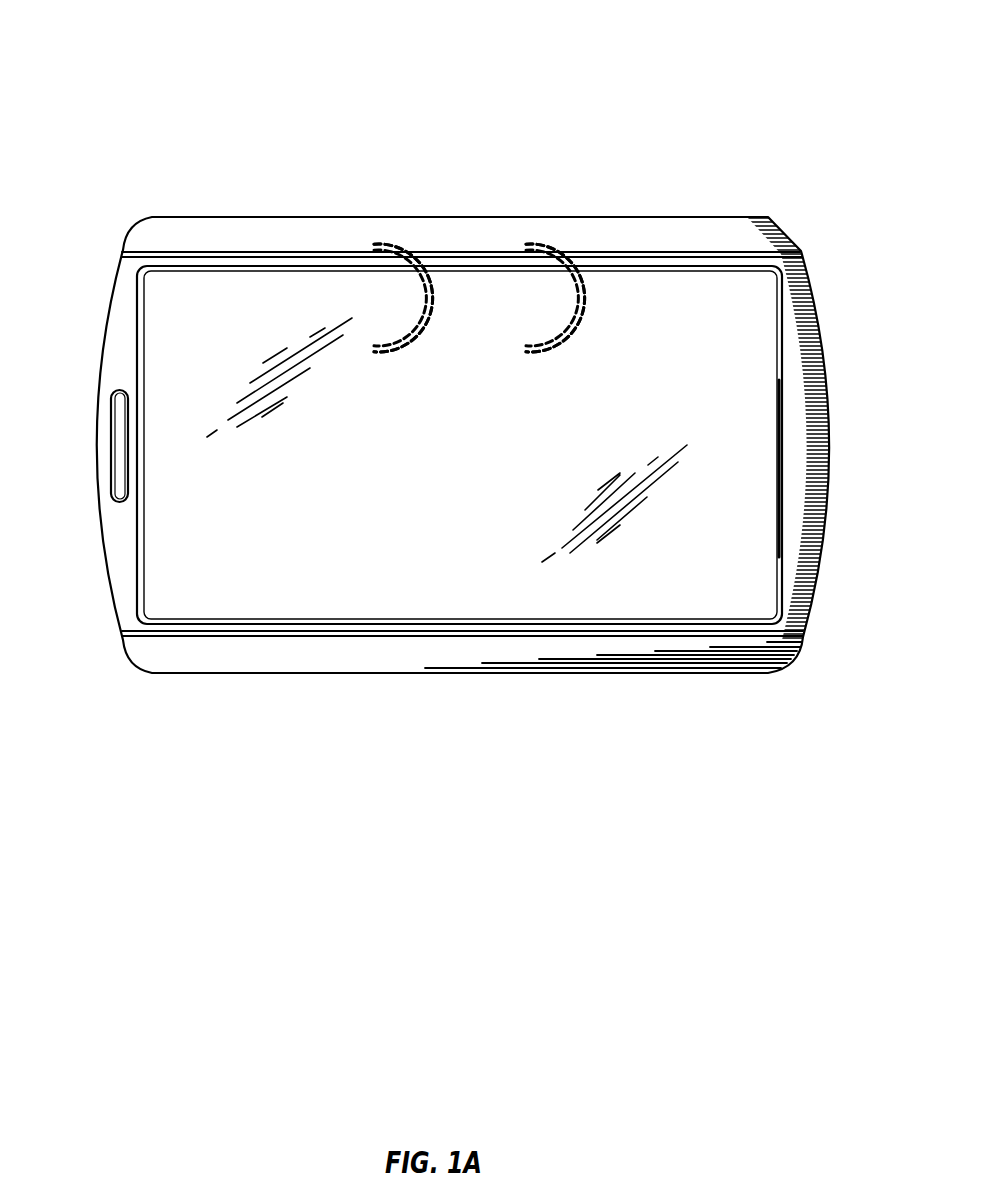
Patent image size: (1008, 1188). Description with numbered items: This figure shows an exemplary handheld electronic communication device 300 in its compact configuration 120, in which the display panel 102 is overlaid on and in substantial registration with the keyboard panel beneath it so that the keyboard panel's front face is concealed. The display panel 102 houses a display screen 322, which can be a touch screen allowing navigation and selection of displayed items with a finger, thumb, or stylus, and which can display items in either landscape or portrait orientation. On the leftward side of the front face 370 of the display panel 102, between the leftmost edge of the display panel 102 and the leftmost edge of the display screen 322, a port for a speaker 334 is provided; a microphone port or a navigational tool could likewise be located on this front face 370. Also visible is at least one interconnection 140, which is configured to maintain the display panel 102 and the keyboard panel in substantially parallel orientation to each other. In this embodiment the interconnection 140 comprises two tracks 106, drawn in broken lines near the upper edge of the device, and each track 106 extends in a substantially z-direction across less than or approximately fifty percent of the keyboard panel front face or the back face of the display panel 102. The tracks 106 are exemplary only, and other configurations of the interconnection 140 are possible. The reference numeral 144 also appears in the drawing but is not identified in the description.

The compact configuration 120 is at (622, 63).
The handheld electronic communication device 300 is at (200, 86).
The display panel 102 is at (657, 233).
The front face 370 is at (795, 383).
The display screen 322 is at (755, 298).
The speaker 334 is at (118, 440).
The interconnection 140 is at (446, 150).
The track 106 is at (382, 242).
The antenna window 144 is at (420, 330).